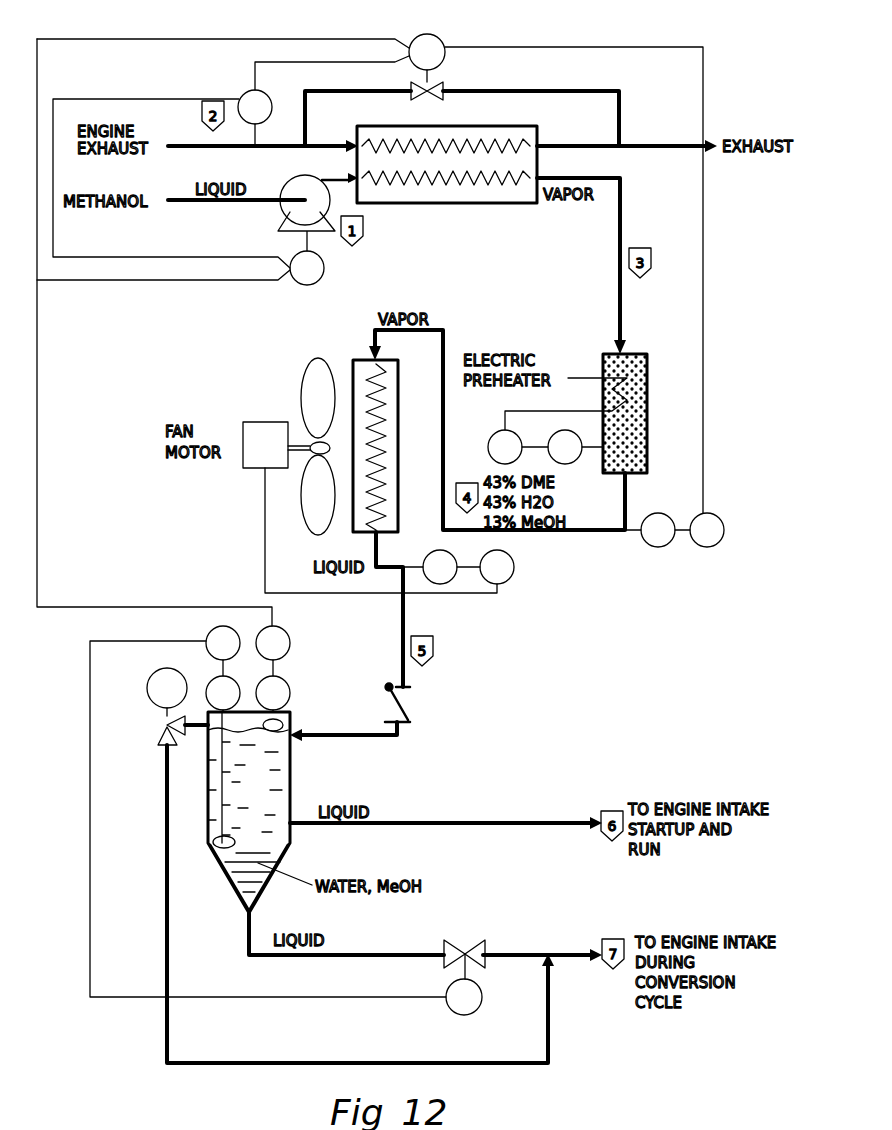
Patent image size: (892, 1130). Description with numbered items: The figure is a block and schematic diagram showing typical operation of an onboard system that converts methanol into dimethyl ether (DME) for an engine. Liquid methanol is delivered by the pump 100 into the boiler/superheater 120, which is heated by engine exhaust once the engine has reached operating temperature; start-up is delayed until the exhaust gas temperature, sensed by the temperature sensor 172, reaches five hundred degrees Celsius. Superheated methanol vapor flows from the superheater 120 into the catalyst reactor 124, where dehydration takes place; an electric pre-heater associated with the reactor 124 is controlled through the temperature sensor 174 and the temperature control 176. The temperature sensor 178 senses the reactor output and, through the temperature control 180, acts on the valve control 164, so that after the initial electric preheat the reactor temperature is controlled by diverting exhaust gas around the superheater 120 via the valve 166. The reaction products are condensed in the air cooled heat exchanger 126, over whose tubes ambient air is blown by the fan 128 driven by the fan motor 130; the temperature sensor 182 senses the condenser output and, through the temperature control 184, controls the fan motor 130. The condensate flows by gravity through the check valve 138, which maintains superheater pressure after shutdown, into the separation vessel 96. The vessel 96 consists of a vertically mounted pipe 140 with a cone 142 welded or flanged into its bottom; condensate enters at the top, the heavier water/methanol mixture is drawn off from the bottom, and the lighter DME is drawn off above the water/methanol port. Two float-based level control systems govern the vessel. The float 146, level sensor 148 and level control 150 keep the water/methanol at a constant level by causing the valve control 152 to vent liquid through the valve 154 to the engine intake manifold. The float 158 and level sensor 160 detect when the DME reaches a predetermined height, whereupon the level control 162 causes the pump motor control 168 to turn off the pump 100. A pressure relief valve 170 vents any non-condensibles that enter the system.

The separation vessel 96 is at (290, 768).
The pump 100 is at (282, 203).
The superheater 120 is at (457, 205).
The catalyst reactor 124 is at (647, 428).
The air cooled heat exchanger 126 is at (352, 368).
The fan 128 is at (310, 398).
The fan motor 130 is at (258, 470).
The check valve 138 is at (406, 718).
The pipe 140 is at (208, 770).
The cone 142 is at (232, 895).
The float 146 is at (218, 848).
The level sensor 148 is at (210, 680).
The level control 150 is at (206, 635).
The valve control 152 is at (452, 1013).
The valve 154 is at (470, 940).
The float 158 is at (280, 725).
The level sensor 160 is at (290, 685).
The level control 162 is at (290, 637).
The valve control 164 is at (442, 40).
The valve 166 is at (438, 83).
The pump motor control 168 is at (325, 268).
The pressure relief valve 170 is at (150, 703).
The temperature sensor 172 is at (247, 92).
The temperature sensor 174 is at (578, 463).
The temperature control 176 is at (493, 436).
The temperature sensor 178 is at (656, 547).
The temperature control 180 is at (707, 547).
The temperature sensor 182 is at (445, 584).
The temperature control 184 is at (505, 584).